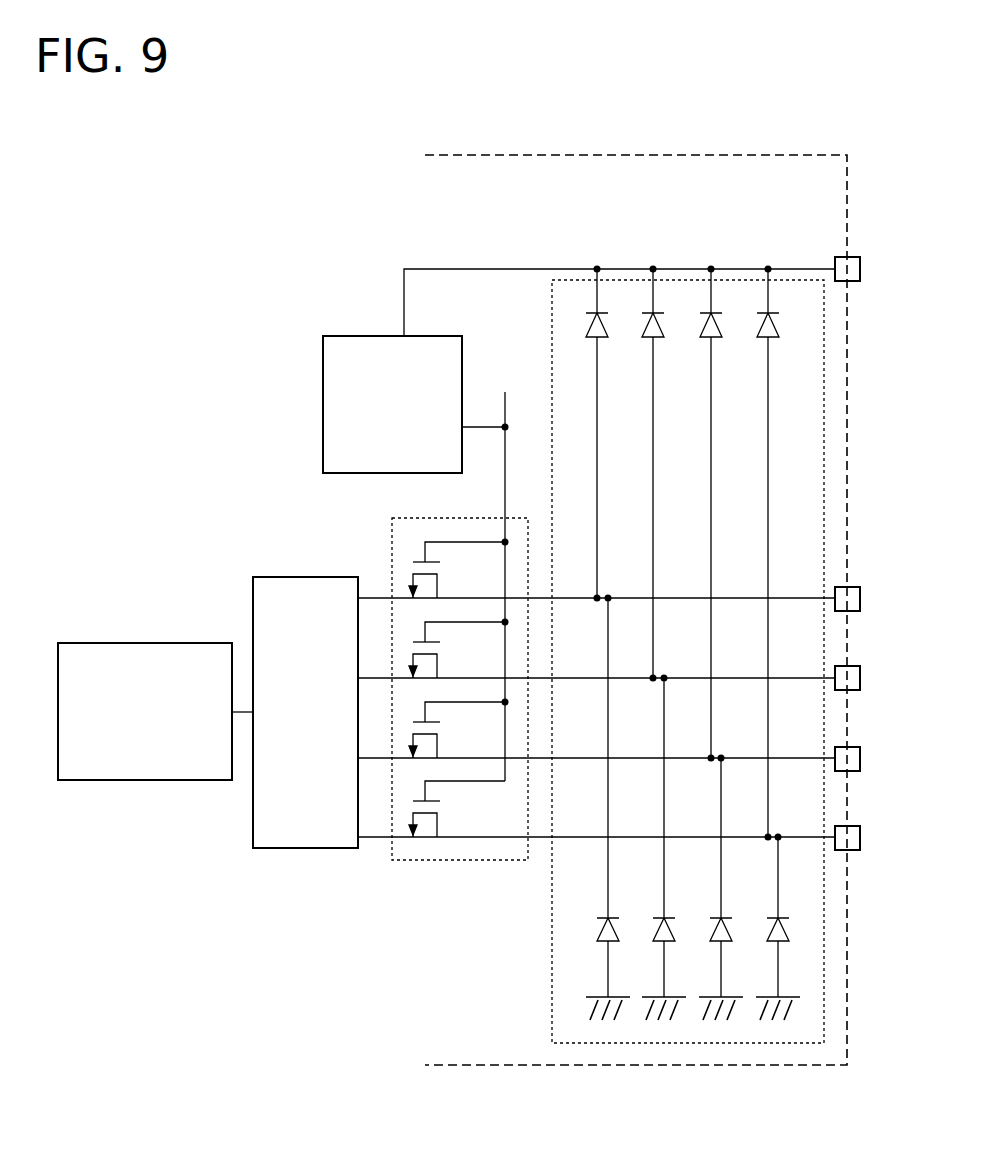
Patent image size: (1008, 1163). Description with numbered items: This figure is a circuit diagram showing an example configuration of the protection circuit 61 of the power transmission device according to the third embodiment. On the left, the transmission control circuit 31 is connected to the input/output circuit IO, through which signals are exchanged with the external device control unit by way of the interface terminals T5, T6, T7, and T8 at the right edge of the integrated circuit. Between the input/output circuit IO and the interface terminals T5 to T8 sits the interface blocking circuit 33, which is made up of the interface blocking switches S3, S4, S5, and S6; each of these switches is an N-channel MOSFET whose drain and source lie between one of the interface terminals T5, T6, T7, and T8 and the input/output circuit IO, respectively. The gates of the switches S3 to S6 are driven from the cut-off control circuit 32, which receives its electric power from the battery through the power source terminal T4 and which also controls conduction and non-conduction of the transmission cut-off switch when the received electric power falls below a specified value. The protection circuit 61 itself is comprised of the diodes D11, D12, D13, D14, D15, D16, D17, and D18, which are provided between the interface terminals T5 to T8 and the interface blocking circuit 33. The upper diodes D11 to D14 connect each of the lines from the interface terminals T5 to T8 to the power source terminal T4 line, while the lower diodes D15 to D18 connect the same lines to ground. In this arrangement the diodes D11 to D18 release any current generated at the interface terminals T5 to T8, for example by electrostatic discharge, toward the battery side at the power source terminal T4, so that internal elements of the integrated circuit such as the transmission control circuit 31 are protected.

The transmission control circuit 31 is at (112, 643).
The input/output circuit IO is at (253, 598).
The cut-off control circuit 32 is at (340, 336).
The interface blocking circuit 33 is at (392, 518).
The protection circuit 61 is at (628, 268).
The interface blocking switch S3 is at (457, 570).
The interface blocking switch S4 is at (457, 650).
The interface blocking switch S5 is at (457, 730).
The interface blocking switch S6 is at (457, 809).
The diode D11 is at (616, 434).
The diode D12 is at (672, 474).
The diode D13 is at (729, 514).
The diode D14 is at (786, 553).
The diode D15 is at (593, 808).
The diode D16 is at (650, 848).
The diode D17 is at (707, 888).
The diode D18 is at (764, 927).
The power source terminal T4 is at (859, 254).
The interface terminal T5 is at (859, 585).
The interface terminal T6 is at (859, 664).
The interface terminal T7 is at (859, 746).
The interface terminal T8 is at (859, 824).